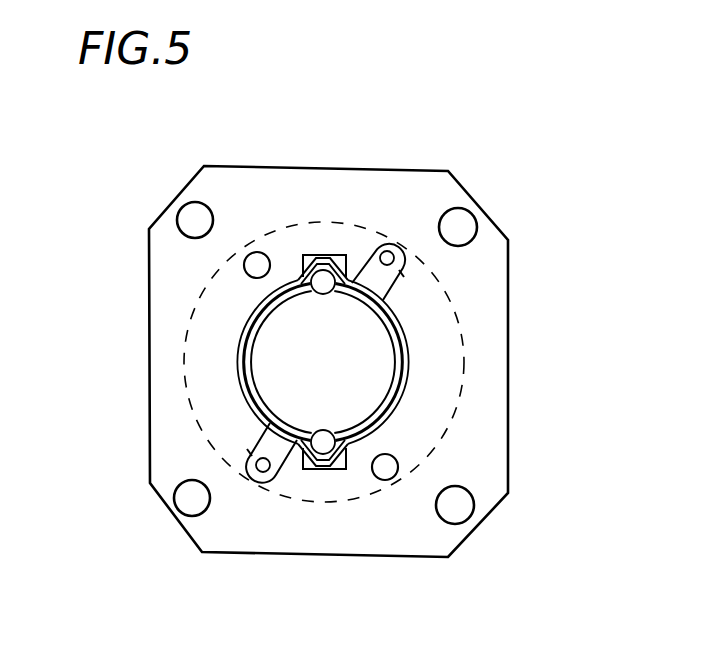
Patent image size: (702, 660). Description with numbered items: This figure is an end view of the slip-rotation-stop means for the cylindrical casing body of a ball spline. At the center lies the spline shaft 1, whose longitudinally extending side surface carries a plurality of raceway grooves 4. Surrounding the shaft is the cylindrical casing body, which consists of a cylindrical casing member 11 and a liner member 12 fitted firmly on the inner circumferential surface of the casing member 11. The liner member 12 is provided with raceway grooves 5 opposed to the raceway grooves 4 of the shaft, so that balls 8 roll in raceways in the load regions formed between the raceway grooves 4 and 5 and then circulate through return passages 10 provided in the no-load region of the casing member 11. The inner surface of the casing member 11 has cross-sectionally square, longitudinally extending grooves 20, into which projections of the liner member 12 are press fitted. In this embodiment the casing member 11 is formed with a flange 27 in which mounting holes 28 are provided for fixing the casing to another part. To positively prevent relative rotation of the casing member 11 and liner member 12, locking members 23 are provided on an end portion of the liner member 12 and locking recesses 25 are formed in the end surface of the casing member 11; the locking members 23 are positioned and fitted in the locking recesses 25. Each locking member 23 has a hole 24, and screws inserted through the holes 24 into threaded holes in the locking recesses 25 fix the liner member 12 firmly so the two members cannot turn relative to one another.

The spline shaft 1 is at (313, 362).
The raceway grooves 4 is at (304, 470).
The raceway grooves 5 is at (326, 470).
The balls 8 is at (351, 262).
The return passages 10 is at (256, 260).
The cylindrical casing member 11 is at (190, 320).
The liner member 12 is at (409, 357).
The grooves 20 is at (303, 262).
The locking members 23 is at (398, 261).
The holes 24 is at (388, 256).
The locking recesses 25 is at (403, 272).
The flange 27 is at (500, 428).
The mounting holes 28 is at (194, 215).